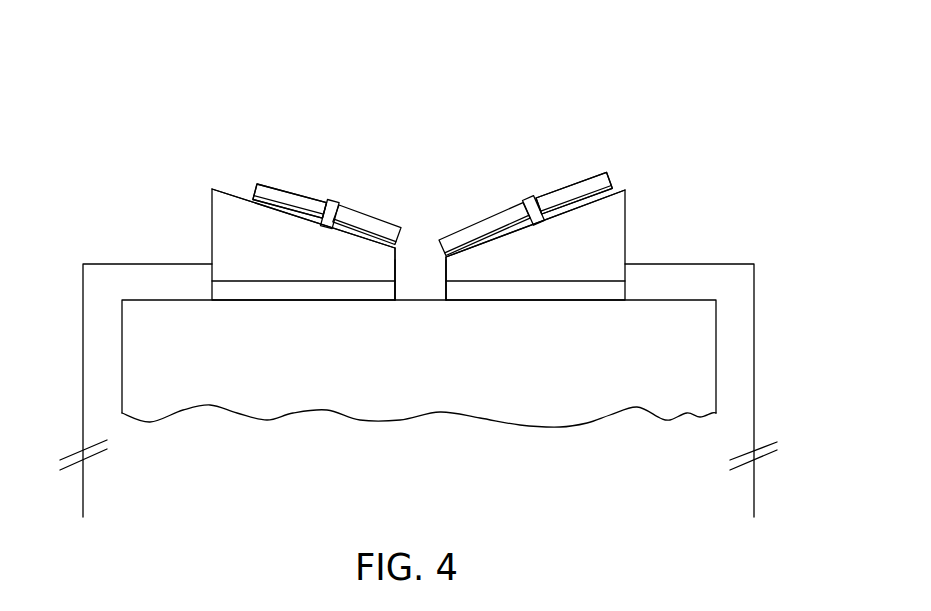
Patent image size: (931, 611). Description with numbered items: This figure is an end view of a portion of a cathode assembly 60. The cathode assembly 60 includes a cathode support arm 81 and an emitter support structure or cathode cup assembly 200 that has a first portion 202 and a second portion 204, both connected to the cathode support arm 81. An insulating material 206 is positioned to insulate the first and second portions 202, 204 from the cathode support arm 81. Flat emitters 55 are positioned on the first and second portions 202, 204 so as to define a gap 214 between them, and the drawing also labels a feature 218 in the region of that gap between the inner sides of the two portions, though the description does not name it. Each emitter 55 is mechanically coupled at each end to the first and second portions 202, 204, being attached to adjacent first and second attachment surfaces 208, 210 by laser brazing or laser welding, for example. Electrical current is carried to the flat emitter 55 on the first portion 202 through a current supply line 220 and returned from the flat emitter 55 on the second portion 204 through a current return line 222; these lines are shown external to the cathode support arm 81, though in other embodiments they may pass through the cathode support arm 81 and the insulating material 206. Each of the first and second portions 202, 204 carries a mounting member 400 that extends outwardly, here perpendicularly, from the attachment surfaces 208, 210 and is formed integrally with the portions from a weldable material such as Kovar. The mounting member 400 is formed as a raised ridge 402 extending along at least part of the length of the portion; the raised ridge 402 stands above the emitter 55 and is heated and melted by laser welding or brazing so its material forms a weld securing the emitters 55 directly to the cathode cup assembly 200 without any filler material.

The cathode assembly 60 is at (182, 86).
The cathode support arm 81 is at (267, 404).
The cathode cup assembly 200 is at (464, 240).
The first portion 202 is at (235, 233).
The second portion 204 is at (615, 208).
The insulating material 206 is at (330, 292).
The first attachment surface 208 is at (237, 193).
The second attachment surface 210 is at (614, 186).
The gap 214 is at (417, 258).
The inner side walls 218 is at (398, 249).
The current supply line 220 is at (82, 342).
The current return line 222 is at (755, 355).
The flat emitter 55 is at (297, 190).
The mounting member 400 is at (333, 195).
The raised ridge 402 is at (322, 228).